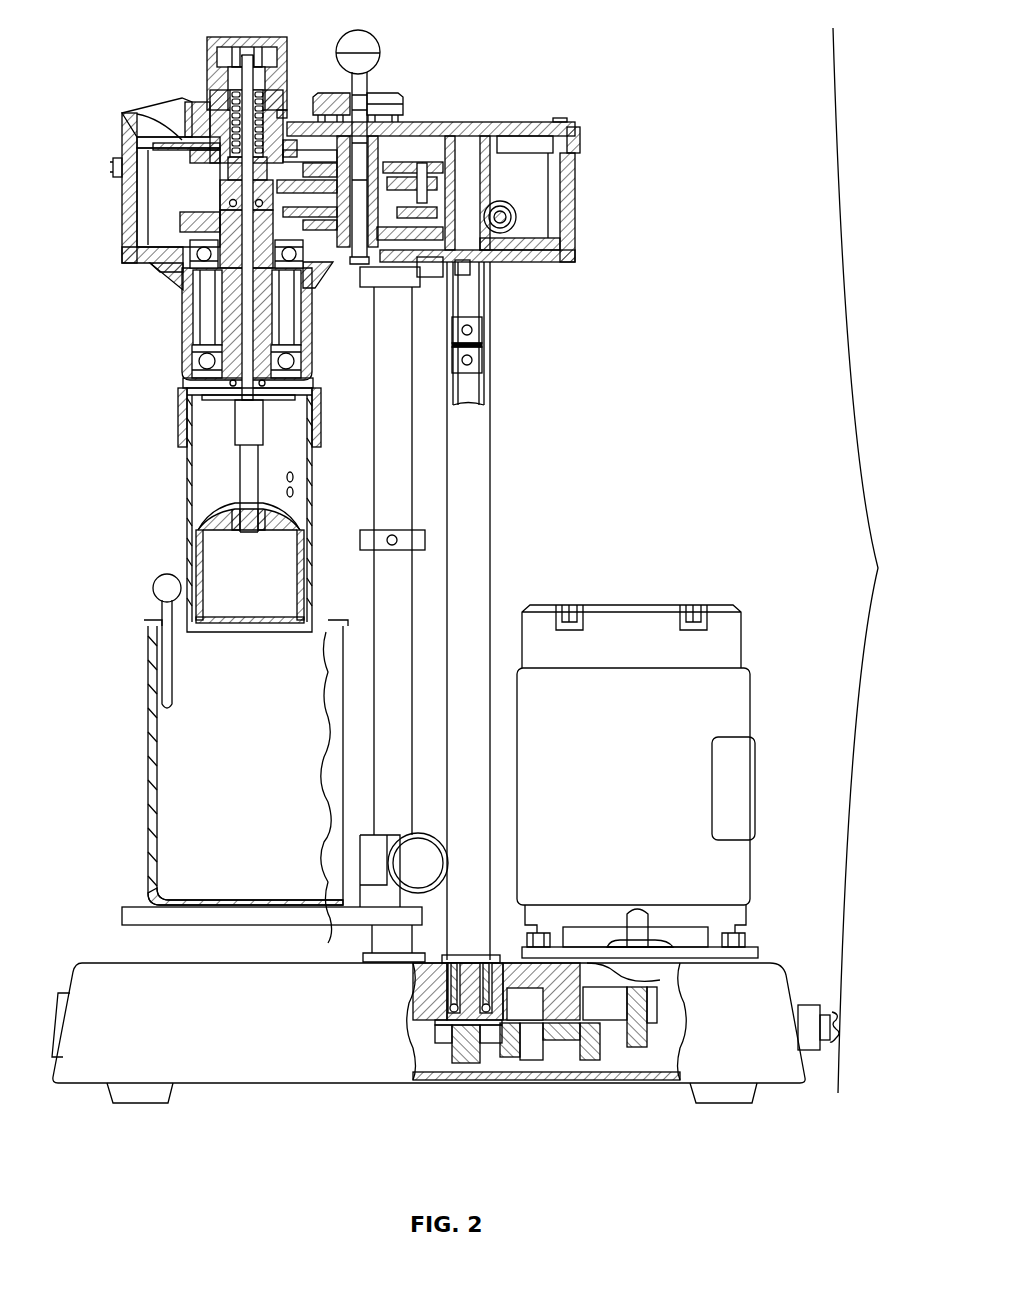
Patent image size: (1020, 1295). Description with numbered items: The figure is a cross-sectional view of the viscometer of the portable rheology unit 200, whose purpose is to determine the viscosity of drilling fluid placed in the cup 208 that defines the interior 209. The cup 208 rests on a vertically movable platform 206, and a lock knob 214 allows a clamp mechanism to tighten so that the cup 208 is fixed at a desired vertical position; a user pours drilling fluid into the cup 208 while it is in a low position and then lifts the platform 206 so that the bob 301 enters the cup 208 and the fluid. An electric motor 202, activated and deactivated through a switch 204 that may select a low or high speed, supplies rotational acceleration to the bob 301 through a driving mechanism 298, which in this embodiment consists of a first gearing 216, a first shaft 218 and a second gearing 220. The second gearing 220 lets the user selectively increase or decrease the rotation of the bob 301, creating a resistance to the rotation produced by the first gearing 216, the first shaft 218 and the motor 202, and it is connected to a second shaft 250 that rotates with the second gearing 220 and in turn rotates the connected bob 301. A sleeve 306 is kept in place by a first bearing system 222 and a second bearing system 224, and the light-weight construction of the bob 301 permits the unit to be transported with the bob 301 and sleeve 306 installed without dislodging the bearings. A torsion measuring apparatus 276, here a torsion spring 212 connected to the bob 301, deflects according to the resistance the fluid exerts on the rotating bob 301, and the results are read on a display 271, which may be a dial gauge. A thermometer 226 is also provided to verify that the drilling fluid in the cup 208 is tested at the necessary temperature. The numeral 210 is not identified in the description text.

The portable rheology unit 200 is at (878, 560).
The electric motor 202 is at (763, 820).
The switch 204 is at (662, 950).
The vertically movable platform 206 is at (122, 913).
The cup 208 is at (203, 781).
The interior 209 is at (172, 752).
The sample cup 210 is at (202, 502).
The torsion spring 212 is at (172, 146).
The lock knob 214 is at (388, 858).
The first gearing 216 is at (652, 1106).
The first shaft 218 is at (491, 515).
The second gearing 220 is at (585, 125).
The first bearing system 222 is at (192, 365).
The second bearing system 224 is at (177, 247).
The thermometer 226 is at (152, 600).
The second shaft 250 is at (197, 314).
The display 271 is at (135, 120).
The torsion measuring apparatus 276 is at (205, 45).
The driving mechanism 298 is at (540, 430).
The bob 301 is at (192, 562).
The sleeve 306 is at (240, 487).